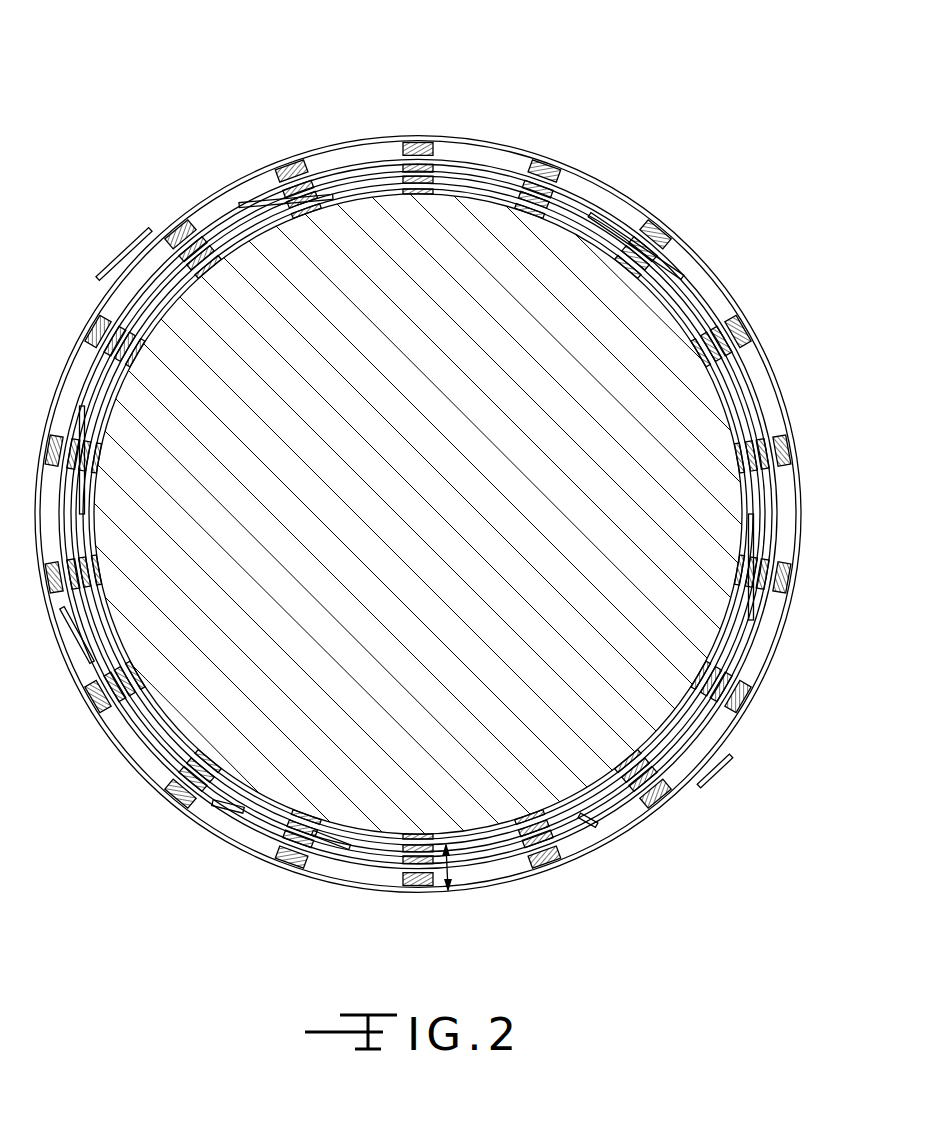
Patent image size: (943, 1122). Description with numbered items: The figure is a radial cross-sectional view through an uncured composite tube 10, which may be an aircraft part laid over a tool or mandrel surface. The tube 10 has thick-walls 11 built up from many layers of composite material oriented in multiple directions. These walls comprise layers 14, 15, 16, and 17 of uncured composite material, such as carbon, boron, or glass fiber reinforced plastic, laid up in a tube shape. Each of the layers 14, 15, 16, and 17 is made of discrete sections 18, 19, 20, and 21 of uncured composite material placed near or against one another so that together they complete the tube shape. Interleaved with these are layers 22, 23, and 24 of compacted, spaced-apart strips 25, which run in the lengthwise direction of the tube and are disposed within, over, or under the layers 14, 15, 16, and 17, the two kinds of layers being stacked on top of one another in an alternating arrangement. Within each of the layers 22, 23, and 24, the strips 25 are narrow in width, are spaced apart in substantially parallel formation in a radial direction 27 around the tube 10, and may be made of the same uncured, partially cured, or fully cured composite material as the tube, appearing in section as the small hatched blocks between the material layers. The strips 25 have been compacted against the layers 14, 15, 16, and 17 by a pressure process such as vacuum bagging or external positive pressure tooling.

The uncured composite tube 10 is at (288, 88).
The thick-walls 11 is at (698, 248).
The layer of uncured composite material 14 is at (673, 732).
The layer of uncured composite material 15 is at (630, 790).
The layer of uncured composite material 16 is at (570, 840).
The layer of uncured composite material 17 is at (500, 887).
The discrete section of uncured composite material 18 is at (437, 178).
The discrete section of uncured composite material 19 is at (70, 491).
The discrete section of uncured composite material 20 is at (217, 812).
The discrete section of uncured composite material 21 is at (257, 840).
The layer of compacted, spaced-apart strips 22 is at (645, 768).
The layer of compacted, spaced-apart strips 23 is at (532, 863).
The layer of compacted, spaced-apart strips 24 is at (373, 885).
The strips 25 is at (89, 324).
The radial direction 27 is at (450, 843).